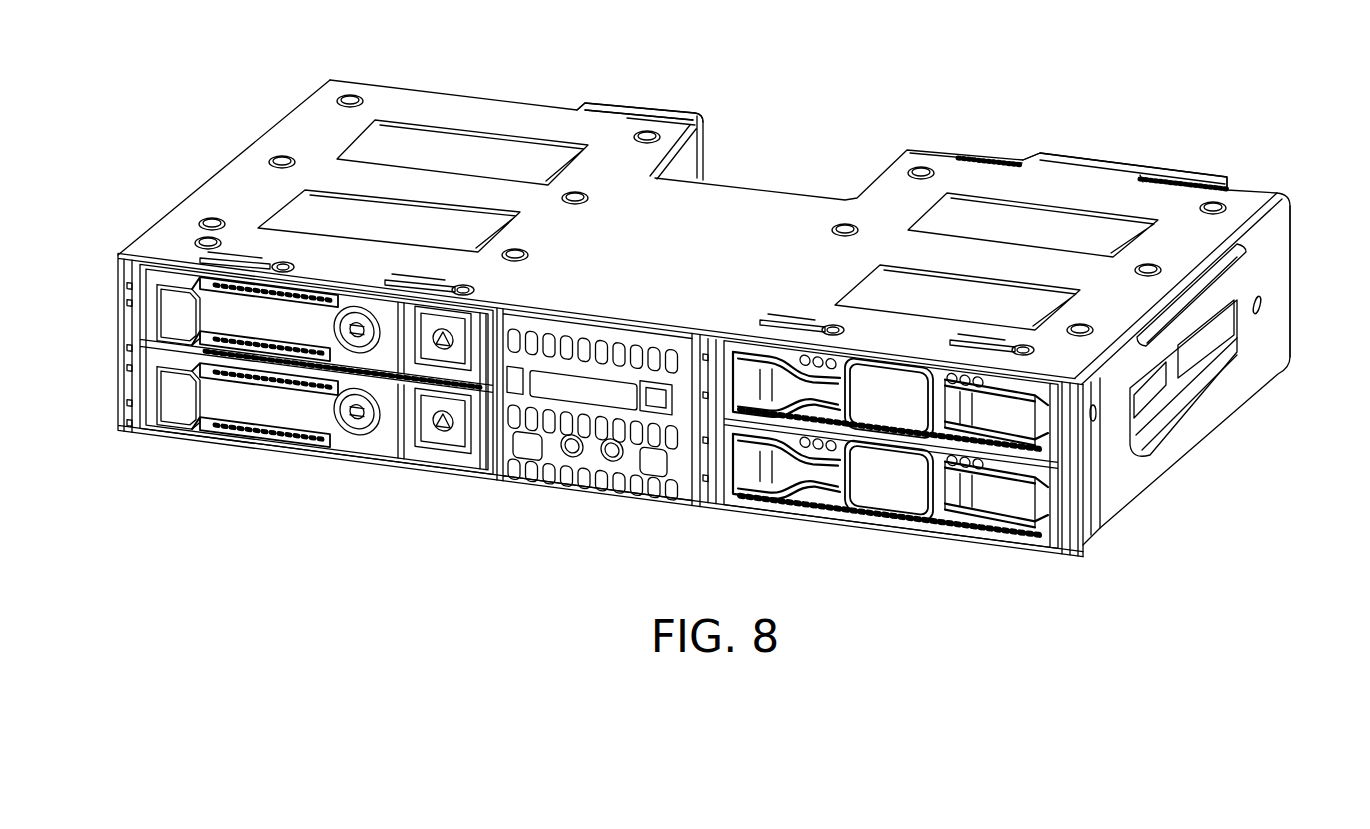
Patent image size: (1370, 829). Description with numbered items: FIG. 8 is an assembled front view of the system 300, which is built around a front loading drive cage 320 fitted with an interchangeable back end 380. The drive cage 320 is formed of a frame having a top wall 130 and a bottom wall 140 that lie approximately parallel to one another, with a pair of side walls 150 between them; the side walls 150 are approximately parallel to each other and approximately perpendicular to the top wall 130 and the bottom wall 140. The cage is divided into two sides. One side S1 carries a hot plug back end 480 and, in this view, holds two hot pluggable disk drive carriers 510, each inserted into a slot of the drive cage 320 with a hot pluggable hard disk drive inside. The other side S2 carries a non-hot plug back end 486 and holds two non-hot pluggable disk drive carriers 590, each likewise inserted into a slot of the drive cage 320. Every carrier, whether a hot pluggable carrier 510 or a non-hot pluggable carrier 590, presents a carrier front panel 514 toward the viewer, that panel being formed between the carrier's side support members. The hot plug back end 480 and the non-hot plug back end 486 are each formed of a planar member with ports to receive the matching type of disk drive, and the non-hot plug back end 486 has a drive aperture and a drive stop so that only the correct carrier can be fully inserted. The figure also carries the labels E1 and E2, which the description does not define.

The system 300 is at (905, 50).
The top wall 130 is at (750, 200).
The drive cage 320 is at (222, 152).
The interchangeable back end 380 is at (628, 98).
The hot plug back end 480 is at (666, 113).
The non-hot plug back end 486 is at (1143, 177).
The side walls 150 is at (112, 300).
The hot pluggable disk drive carrier 510 is at (150, 325).
The carrier front panel 514 is at (300, 325).
The bottom wall 140 is at (645, 505).
The non-hot pluggable disk drive carrier 590 is at (1052, 428).
The one side of the drive cage S1 is at (455, 480).
The other side of the drive cage S2 is at (790, 522).
The first end E1 is at (1076, 538).
The second end E2 is at (1295, 272).